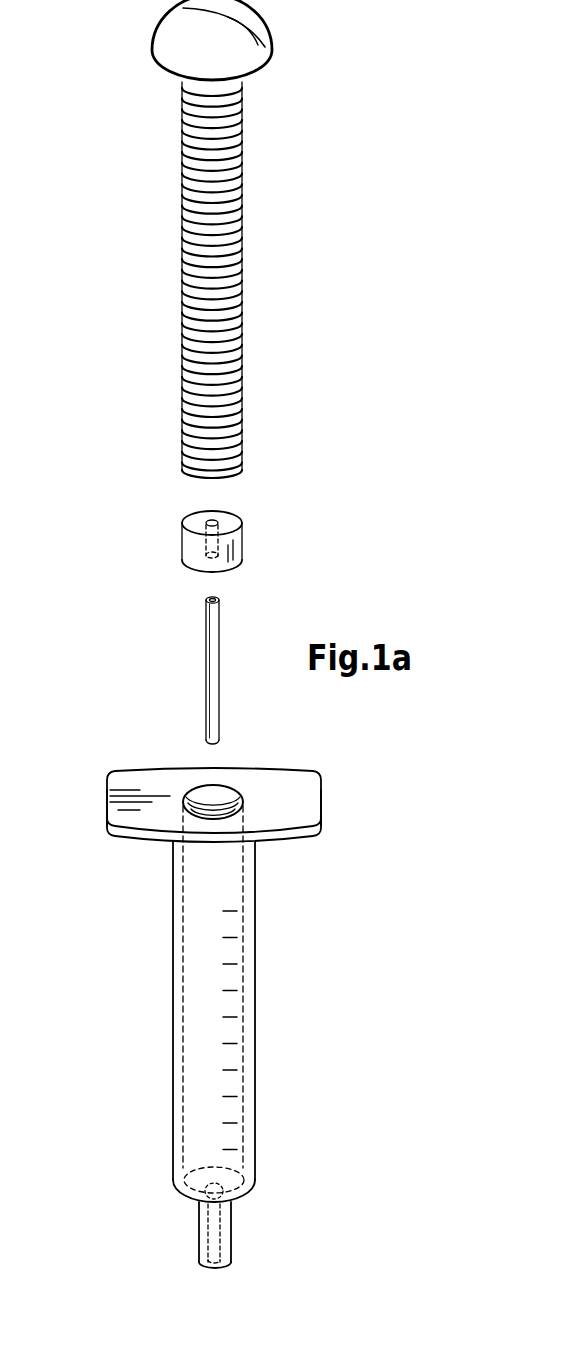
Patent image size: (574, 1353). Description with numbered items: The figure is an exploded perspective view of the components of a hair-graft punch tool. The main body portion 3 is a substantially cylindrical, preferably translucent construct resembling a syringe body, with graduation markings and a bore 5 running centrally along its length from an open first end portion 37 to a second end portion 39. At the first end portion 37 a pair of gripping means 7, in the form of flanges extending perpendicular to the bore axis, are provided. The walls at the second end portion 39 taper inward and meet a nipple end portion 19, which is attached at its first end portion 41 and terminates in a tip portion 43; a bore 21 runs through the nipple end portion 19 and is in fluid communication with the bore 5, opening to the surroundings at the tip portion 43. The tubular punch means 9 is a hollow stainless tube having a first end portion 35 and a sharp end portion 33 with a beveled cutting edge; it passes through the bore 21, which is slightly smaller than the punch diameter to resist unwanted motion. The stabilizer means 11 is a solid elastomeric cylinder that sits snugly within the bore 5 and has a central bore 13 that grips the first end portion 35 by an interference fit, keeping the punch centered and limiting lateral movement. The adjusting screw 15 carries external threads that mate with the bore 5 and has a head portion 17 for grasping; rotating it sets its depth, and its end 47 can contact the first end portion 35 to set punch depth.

The main body portion 3 is at (256, 1007).
The bore 5 is at (183, 994).
The gripping means 7 is at (107, 805).
The tubular punch means 9 is at (206, 670).
The stabilizer means 11 is at (243, 540).
The bore 13 is at (206, 552).
The adjusting screw 15 is at (243, 258).
The head portion 17 is at (264, 21).
The nipple end portion 19 is at (232, 1228).
The bore 21 is at (200, 1228).
The sharp end portion 33 is at (210, 746).
The first end portion 35 is at (220, 598).
The first end portion 37 is at (254, 779).
The second end portion 39 is at (246, 1194).
The first end portion 41 is at (178, 1186).
The tip portion 43 is at (208, 1269).
The end 47 is at (206, 474).